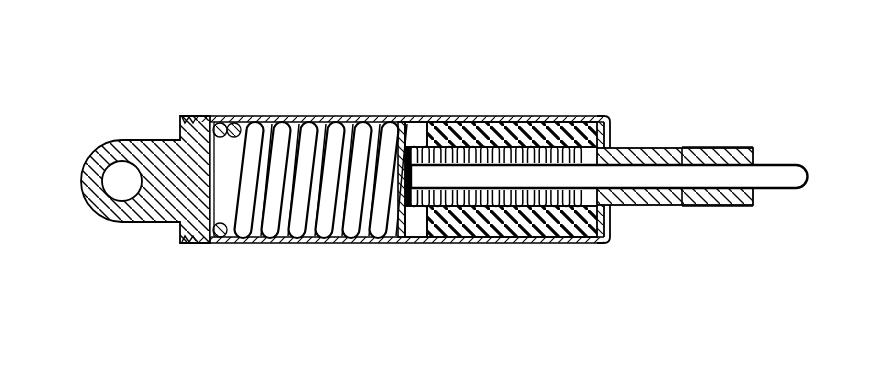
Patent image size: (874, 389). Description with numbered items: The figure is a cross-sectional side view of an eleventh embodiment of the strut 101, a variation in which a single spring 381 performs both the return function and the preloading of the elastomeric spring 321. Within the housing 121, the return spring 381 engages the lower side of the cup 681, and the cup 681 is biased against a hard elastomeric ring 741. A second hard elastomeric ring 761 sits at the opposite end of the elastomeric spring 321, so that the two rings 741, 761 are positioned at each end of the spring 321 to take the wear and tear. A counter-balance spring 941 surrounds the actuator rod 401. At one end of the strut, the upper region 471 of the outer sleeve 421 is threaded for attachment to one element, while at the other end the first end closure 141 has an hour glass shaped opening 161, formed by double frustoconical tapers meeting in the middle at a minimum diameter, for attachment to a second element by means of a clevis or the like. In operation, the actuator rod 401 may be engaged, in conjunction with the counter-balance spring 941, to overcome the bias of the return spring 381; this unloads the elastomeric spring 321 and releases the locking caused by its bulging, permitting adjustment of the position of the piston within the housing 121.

The strut 101 is at (402, 94).
The housing 121 is at (327, 244).
The first end closure 141 is at (160, 224).
The hour glass shaped opening 161 is at (112, 140).
The elastomeric spring 321 is at (552, 116).
The return spring 381 is at (313, 116).
The actuator rod 401 is at (793, 167).
The outer sleeve 421 is at (649, 148).
The upper region of outer sleeve 471 is at (713, 149).
The cup 681 is at (422, 244).
The hard elastomeric ring 741 is at (448, 244).
The hard elastomeric ring 761 is at (587, 244).
The counter-balance spring 941 is at (510, 116).